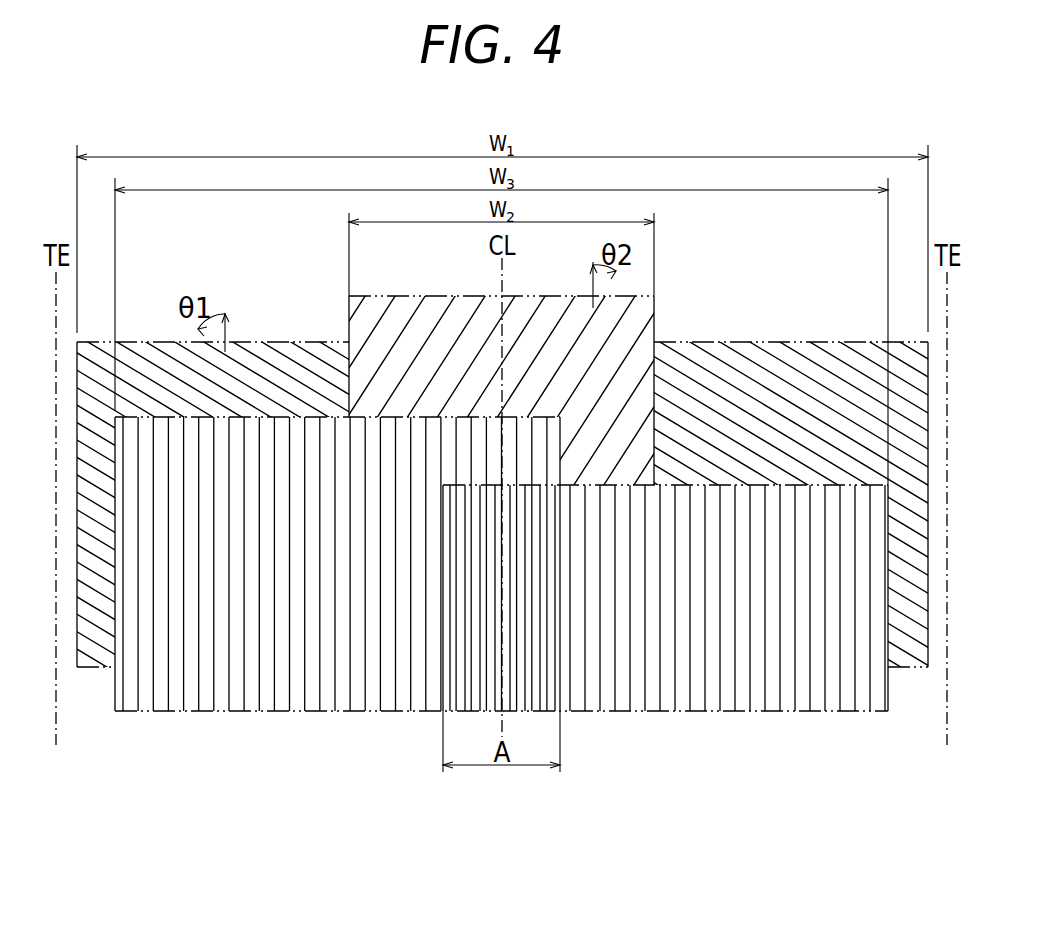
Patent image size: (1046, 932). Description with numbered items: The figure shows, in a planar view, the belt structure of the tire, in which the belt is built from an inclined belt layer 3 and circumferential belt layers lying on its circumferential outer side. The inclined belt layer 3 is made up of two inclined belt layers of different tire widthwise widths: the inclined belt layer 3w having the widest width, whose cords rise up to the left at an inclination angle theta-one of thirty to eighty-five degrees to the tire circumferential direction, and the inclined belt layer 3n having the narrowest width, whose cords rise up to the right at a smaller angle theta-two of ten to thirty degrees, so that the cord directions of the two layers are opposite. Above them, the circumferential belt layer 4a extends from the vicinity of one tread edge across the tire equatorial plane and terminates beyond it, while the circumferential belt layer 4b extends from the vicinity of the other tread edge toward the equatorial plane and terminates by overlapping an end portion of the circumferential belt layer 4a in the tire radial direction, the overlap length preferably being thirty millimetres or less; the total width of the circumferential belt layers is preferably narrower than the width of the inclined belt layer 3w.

The inclined belt layer 3 is at (474, 503).
The inclined belt layer having narrowest width 3n is at (430, 312).
The inclined belt layer having widest width 3w is at (795, 360).
The circumferential belt layer 4a is at (285, 690).
The circumferential belt layer 4b is at (703, 693).